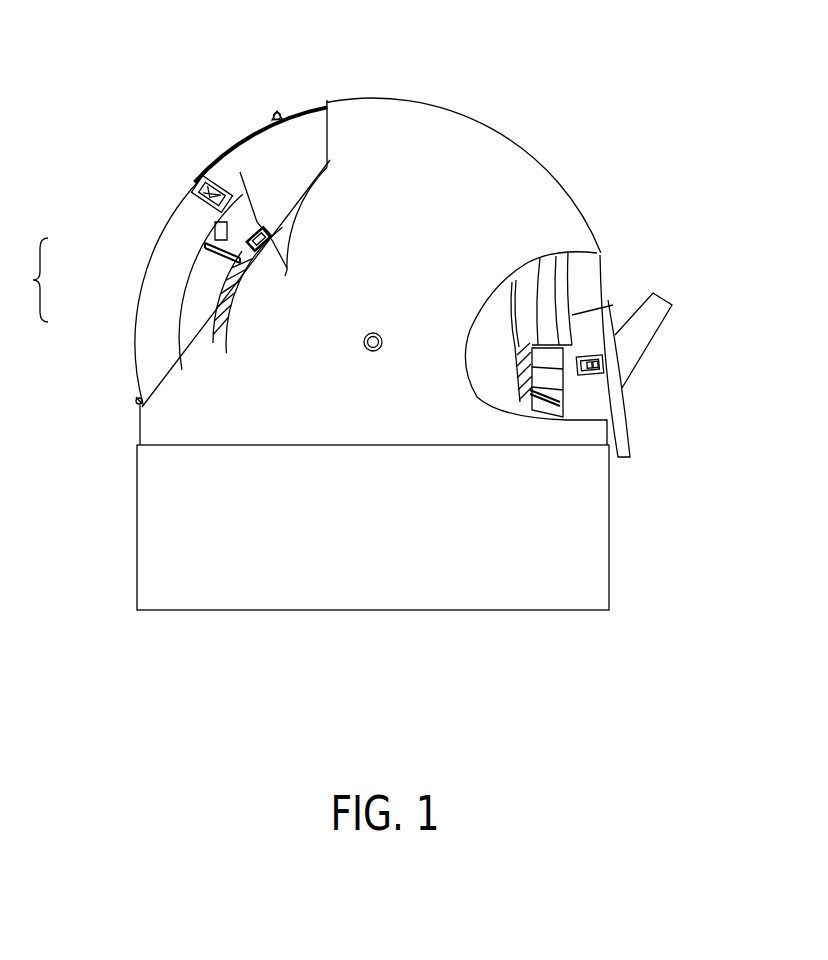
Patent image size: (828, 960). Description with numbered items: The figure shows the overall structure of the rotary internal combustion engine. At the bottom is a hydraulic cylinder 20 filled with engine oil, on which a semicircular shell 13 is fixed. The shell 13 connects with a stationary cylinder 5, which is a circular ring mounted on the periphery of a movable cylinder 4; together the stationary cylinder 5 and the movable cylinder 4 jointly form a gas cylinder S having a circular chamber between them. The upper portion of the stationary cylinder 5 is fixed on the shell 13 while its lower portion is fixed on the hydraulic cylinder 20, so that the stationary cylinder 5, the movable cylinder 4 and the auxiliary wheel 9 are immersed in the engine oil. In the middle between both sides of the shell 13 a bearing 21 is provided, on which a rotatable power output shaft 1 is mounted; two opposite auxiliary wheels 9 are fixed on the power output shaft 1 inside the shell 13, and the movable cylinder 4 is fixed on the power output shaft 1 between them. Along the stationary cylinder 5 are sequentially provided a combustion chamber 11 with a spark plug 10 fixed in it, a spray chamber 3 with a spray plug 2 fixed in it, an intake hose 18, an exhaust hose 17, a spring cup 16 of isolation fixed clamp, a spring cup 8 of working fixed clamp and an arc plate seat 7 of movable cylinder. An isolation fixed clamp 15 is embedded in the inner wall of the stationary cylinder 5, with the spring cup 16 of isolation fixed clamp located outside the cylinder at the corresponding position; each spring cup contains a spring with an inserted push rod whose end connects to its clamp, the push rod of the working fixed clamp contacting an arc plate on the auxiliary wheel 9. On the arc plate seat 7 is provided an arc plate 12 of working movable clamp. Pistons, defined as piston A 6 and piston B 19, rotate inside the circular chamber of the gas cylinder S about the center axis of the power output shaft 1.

The power output shaft 1 is at (366, 357).
The spray plug 2 is at (138, 403).
The spray chamber 3 is at (134, 397).
The movable cylinder 4 is at (200, 305).
The stationary cylinder 5 is at (177, 253).
The gas cylinder S is at (31, 280).
The piston A 6 is at (242, 260).
The arc plate seat of movable cylinder 7 is at (243, 227).
The spring cup of working fixed clamp 8 is at (197, 177).
The auxiliary wheel 9 is at (247, 167).
The spark plug 10 is at (273, 118).
The combustion chamber 11 is at (280, 113).
The arc plate of working movable clamp 12 is at (247, 250).
The semicircular shell 13 is at (446, 218).
The isolation fixed clamp 15 is at (550, 363).
The spring cup of isolation fixed clamp 16 is at (565, 400).
The exhaust hose 17 is at (642, 360).
The intake hose 18 is at (572, 317).
The piston B 19 is at (553, 385).
The hydraulic cylinder 20 is at (585, 492).
The bearing 21 is at (380, 353).